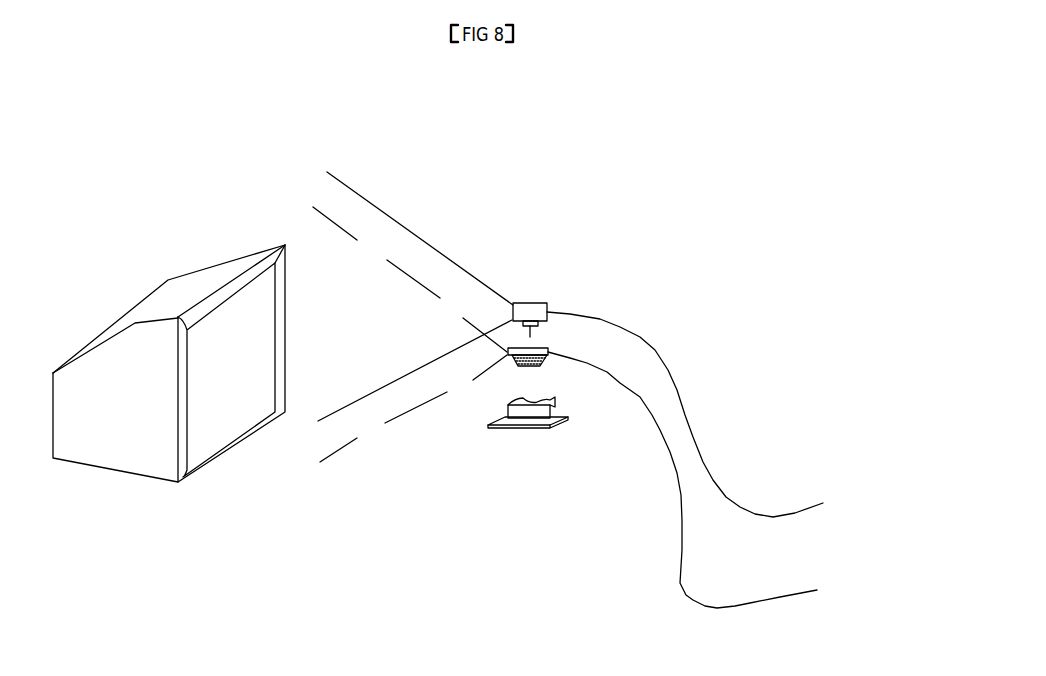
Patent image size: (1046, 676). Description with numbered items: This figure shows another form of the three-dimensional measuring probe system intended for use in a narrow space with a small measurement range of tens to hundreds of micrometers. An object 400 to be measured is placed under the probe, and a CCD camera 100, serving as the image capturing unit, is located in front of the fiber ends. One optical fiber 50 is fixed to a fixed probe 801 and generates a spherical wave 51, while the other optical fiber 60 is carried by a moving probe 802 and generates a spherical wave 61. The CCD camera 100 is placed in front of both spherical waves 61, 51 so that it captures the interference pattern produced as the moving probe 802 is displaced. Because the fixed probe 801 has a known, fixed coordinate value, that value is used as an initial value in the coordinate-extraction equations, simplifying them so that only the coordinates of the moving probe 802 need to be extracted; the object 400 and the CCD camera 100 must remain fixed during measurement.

The CCD camera 100 is at (212, 388).
The spherical wave 61 is at (397, 217).
The spherical wave 51 is at (405, 412).
The moving probe 802 is at (527, 303).
The fixed probe 801 is at (533, 348).
The object to be measured 400 is at (558, 408).
The optical fiber 60 is at (748, 414).
The optical fiber 50 is at (655, 480).